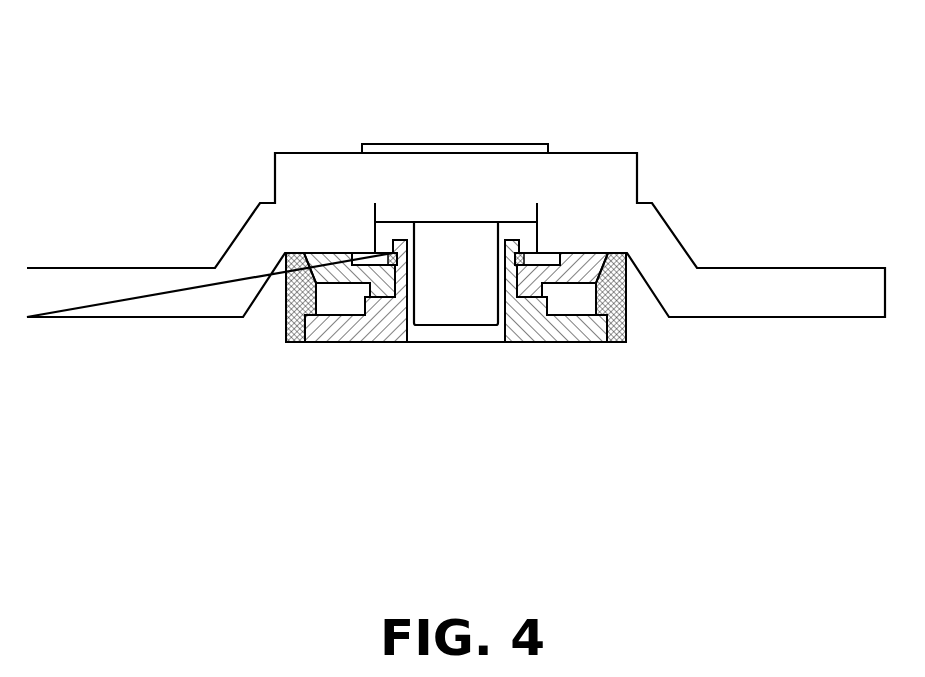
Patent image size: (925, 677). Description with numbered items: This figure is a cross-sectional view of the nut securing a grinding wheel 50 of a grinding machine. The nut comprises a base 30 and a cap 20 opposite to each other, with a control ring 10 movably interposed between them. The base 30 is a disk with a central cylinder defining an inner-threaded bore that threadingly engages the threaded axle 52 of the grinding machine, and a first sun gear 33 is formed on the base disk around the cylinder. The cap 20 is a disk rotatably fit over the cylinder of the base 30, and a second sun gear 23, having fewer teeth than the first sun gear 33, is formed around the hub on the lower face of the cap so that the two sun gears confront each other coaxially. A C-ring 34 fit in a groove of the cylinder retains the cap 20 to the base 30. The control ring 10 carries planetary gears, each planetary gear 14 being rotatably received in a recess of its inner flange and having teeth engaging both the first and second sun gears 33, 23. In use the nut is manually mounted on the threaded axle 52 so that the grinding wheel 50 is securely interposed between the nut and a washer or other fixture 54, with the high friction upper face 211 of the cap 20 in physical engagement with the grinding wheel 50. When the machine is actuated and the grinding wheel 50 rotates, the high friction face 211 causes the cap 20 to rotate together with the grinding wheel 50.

The control ring 10 is at (283, 339).
The planetary gear 14 is at (572, 305).
The cap 20 is at (588, 250).
The second sun gear 23 is at (362, 292).
The base 30 is at (327, 346).
The first sun gear 33 is at (541, 318).
The C-ring 34 is at (389, 251).
The grinding wheel 50 is at (675, 233).
The threaded axle 52 is at (472, 328).
The washer or other fixture 54 is at (590, 152).
The upper face 211 is at (287, 297).